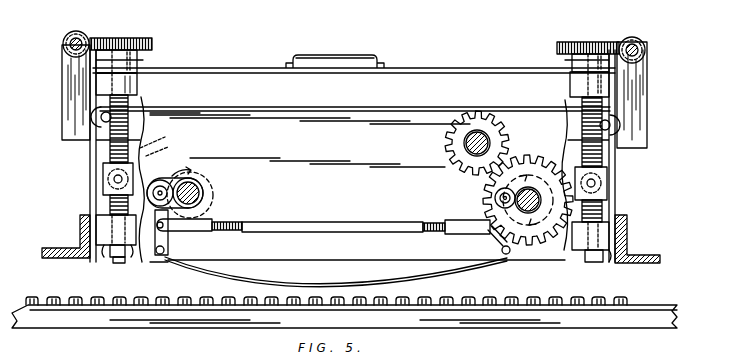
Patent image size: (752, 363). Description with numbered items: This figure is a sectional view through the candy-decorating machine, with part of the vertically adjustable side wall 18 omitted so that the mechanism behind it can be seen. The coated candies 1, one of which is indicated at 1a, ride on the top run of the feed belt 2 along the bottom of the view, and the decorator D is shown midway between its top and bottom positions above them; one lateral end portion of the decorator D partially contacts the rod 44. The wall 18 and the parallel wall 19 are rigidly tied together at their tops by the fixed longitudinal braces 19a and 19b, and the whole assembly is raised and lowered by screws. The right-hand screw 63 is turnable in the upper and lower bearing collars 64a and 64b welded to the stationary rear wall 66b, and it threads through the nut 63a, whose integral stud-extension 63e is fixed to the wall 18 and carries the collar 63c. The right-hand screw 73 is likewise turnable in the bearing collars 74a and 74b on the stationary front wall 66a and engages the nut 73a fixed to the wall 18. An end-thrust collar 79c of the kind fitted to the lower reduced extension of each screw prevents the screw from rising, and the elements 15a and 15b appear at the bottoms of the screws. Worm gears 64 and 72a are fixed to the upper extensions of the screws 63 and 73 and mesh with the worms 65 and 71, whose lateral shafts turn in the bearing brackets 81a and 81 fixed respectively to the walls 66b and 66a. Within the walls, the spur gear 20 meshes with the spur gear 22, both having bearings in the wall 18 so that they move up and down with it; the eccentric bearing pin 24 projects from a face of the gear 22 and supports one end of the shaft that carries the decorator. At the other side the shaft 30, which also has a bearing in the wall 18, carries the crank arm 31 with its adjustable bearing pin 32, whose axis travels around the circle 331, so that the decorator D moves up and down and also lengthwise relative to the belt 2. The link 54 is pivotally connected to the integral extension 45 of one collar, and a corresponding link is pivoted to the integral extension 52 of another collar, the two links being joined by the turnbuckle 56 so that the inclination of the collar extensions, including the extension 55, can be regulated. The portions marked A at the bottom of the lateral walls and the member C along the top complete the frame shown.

The candies 1 is at (530, 297).
The type tooth 1a is at (36, 296).
The feed belt 2 is at (657, 305).
The lock nut 15a is at (113, 258).
The lock nut 15b is at (604, 262).
The vertically adjustable side wall 18 is at (141, 113).
The vertically adjustable side wall 19 is at (284, 108).
The fixed longitudinal bar or brace 19a is at (102, 118).
The fixed longitudinal bar or brace 19b is at (609, 124).
The spur gear 20 is at (449, 138).
The spur gear 22 is at (556, 150).
The eccentric bearing pin 24 is at (497, 196).
The shaft 30 is at (206, 183).
The crank arm 31 is at (175, 174).
The bearing pin 32 is at (160, 180).
The circle 331 is at (224, 185).
The bracket base 44 is at (152, 262).
The integral extension 45 is at (166, 235).
The integral extension 52 is at (500, 243).
The link 54 is at (205, 220).
The extension 55 is at (470, 223).
The turnbuckle 56 is at (314, 226).
The screw 63 is at (114, 144).
The nut 63a is at (106, 166).
The collar 63c is at (165, 137).
The integral extension 63e is at (169, 148).
The worm gear 64 is at (146, 43).
The upper bearing collar 64a is at (138, 85).
The lower bearing collar 64b is at (106, 217).
The worm 65 is at (61, 40).
The stationary front wall 66a is at (616, 209).
The stationary rear wall 66b is at (90, 187).
The worm 71 is at (647, 48).
The worm gear 72a is at (566, 42).
The screw 73 is at (606, 157).
The nut 73a is at (608, 194).
The upper bearing collar 74a is at (578, 90).
The lower bearing collar 74b is at (588, 252).
The end-thrust collar 79c is at (121, 264).
The bearing brackets 81 is at (641, 90).
The bearing brackets 81a is at (68, 80).
The base A is at (60, 255).
The cover C is at (412, 70).
The decorator D is at (303, 281).